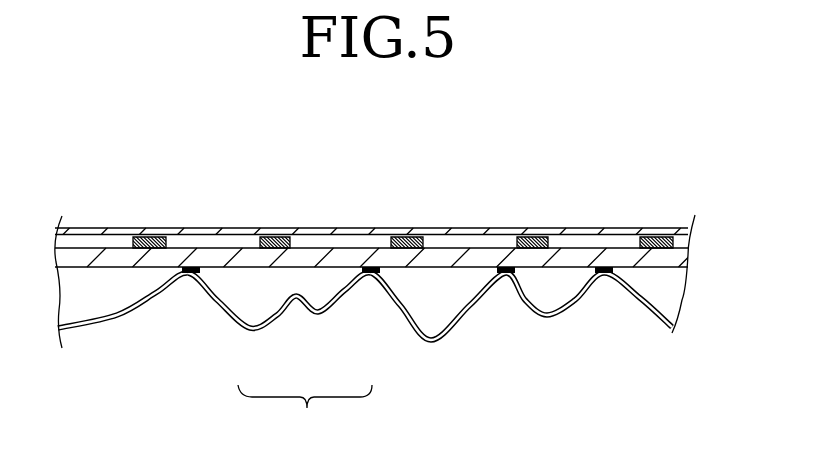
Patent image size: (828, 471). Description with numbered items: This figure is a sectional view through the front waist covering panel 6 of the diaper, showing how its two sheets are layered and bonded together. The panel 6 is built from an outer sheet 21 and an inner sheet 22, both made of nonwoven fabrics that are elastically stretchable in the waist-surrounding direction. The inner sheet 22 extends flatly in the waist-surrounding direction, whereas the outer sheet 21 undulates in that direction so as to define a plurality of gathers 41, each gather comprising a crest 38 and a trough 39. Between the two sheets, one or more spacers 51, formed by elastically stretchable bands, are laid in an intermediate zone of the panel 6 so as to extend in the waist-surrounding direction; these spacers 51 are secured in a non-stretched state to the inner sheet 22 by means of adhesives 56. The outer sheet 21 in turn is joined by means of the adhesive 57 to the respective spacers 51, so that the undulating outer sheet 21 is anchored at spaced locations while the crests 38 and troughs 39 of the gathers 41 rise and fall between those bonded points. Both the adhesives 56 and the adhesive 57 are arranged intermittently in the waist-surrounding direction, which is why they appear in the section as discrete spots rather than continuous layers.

The front waist covering panel 6 is at (118, 232).
The adhesives 56 is at (398, 229).
The spacers 51 is at (473, 258).
The inner sheet 22 is at (617, 232).
The adhesive 57 is at (186, 275).
The outer sheet 21 is at (557, 316).
The crests 38 is at (268, 333).
The troughs 39 is at (374, 278).
The gathers 41 is at (305, 414).